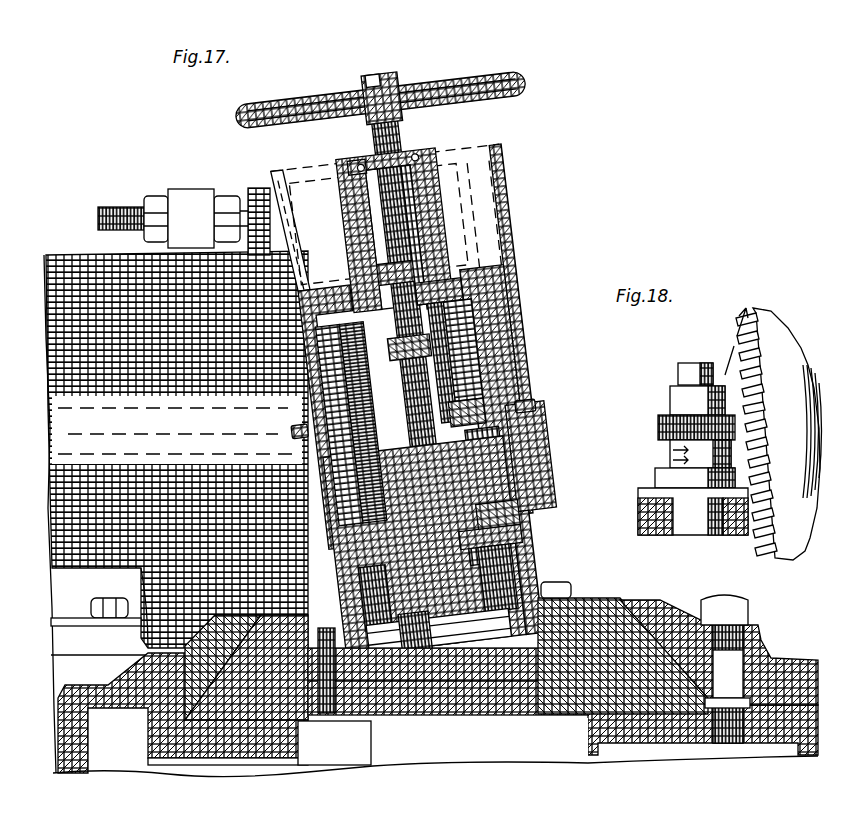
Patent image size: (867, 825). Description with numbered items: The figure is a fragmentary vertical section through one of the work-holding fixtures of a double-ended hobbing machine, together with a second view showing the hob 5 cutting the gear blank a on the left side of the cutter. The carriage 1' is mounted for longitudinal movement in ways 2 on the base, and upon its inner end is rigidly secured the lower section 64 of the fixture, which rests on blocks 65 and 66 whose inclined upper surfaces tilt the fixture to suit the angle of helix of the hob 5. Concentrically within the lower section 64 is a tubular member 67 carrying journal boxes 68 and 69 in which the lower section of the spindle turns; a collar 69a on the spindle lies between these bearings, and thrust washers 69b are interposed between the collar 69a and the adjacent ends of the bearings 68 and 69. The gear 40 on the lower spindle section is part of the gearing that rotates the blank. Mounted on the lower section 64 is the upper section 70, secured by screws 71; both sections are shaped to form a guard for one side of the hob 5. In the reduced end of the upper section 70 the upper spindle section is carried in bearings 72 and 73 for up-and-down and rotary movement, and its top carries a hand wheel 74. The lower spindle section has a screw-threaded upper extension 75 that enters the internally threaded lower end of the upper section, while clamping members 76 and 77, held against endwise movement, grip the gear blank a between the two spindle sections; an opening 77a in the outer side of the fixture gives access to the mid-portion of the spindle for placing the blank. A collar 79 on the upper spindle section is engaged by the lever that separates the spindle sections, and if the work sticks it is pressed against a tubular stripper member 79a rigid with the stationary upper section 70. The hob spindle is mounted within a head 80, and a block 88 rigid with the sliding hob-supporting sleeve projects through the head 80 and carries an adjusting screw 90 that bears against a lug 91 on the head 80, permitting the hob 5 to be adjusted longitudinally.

In FIG. 17, the hand wheel 74 is at (412, 86).
In FIG. 17, the bearing 73 is at (427, 143).
In FIG. 17, the opening 77a is at (395, 208).
In FIG. 17, the collar 79 is at (383, 257).
In FIG. 17, the bearing 72 is at (430, 282).
In FIG. 17, the upper section 70 is at (497, 297).
In FIG. 17, the clamping member 76 is at (463, 360).
In FIG. 17, the screw-threaded upper extension 75 is at (467, 403).
In FIG. 17, the gear blank a is at (466, 445).
In FIG. 18, the gear blank a is at (652, 425).
In FIG. 17, the screws 71 is at (527, 394).
In FIG. 17, the clamping member 77 is at (520, 440).
In FIG. 17, the journal box 68 is at (478, 507).
In FIG. 17, the tubular member 67 is at (472, 520).
In FIG. 17, the collar 69a is at (528, 514).
In FIG. 17, the lug 91 is at (483, 548).
In FIG. 17, the journal box 69 is at (524, 562).
In FIG. 17, the block 66 is at (592, 612).
In FIG. 17, the ways 2 is at (650, 640).
In FIG. 17, the carriage 1' is at (435, 714).
In FIG. 17, the block 65 is at (334, 743).
In FIG. 17, the gear 40 is at (438, 641).
In FIG. 17, the adjusting screw 90 is at (122, 198).
In FIG. 17, the block 88 is at (183, 192).
In FIG. 17, the head 80 is at (176, 512).
In FIG. 17, the tubular stripper member 79a is at (372, 356).
In FIG. 17, the lower section 64 is at (342, 535).
In FIG. 17, the thrust washers 69b is at (338, 565).
In FIG. 18, the hob 5 is at (773, 434).